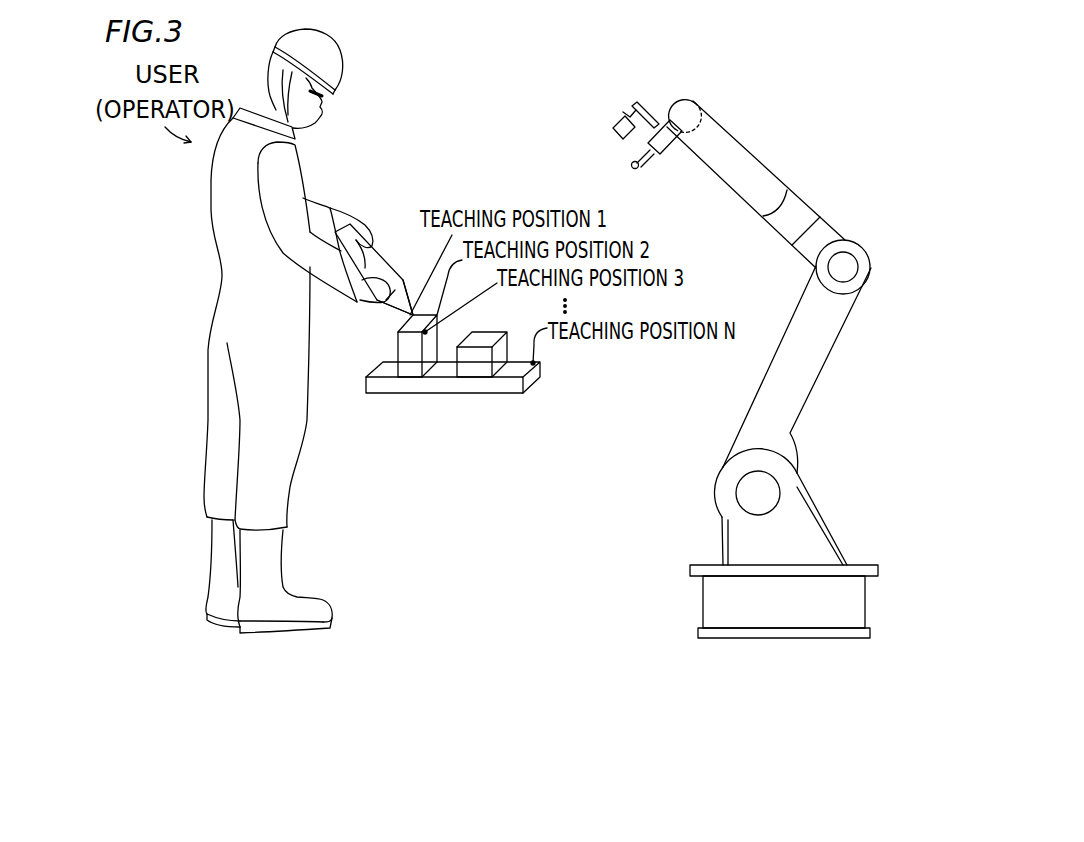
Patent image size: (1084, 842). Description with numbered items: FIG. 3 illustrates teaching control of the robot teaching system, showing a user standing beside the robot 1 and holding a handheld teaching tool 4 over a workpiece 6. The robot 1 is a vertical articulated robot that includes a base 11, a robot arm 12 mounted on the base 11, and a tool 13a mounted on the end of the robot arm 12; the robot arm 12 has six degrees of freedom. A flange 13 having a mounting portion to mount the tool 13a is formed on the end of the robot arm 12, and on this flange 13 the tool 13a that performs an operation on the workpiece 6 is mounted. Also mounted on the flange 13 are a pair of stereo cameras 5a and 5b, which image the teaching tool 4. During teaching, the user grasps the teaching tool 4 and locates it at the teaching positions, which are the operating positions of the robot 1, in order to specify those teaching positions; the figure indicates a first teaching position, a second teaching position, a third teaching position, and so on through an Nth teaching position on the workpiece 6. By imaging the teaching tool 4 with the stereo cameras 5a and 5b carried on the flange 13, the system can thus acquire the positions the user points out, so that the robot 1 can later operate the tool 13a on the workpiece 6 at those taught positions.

The robot 1 is at (739, 355).
The teaching tool 4 is at (379, 269).
The stereo camera 5a is at (608, 107).
The stereo camera 5b is at (617, 130).
The workpiece 6 is at (383, 368).
The base 11 is at (857, 598).
The robot arm 12 is at (882, 356).
The flange 13 is at (667, 146).
The tool 13a is at (645, 165).